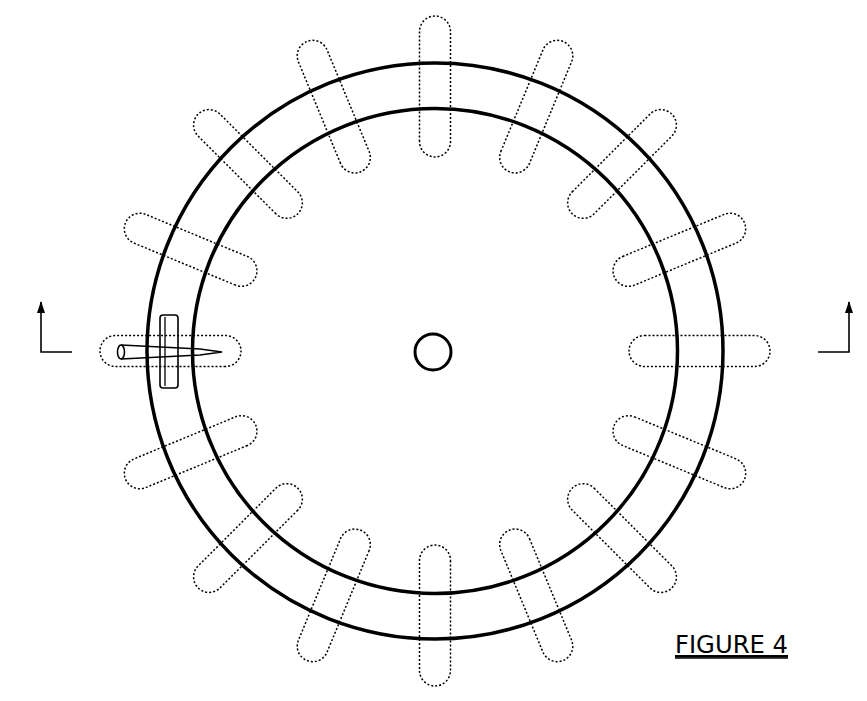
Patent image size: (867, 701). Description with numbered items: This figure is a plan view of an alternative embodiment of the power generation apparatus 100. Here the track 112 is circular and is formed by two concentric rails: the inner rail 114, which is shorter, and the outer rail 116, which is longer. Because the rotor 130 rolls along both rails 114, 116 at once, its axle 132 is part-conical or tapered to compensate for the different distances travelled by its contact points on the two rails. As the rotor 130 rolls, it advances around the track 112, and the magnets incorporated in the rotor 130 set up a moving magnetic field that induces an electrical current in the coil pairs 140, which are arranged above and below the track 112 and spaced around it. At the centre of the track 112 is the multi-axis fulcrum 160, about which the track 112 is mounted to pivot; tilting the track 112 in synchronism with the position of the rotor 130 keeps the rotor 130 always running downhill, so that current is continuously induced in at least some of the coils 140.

The power generation apparatus 100 is at (152, 112).
The track 112 is at (672, 293).
The inner rail 114 is at (572, 548).
The outer rail 116 is at (719, 292).
The rotor 130 is at (170, 330).
The axle 132 is at (208, 351).
The coil pairs 140 is at (530, 155).
The multi-axis fulcrum 160 is at (433, 355).